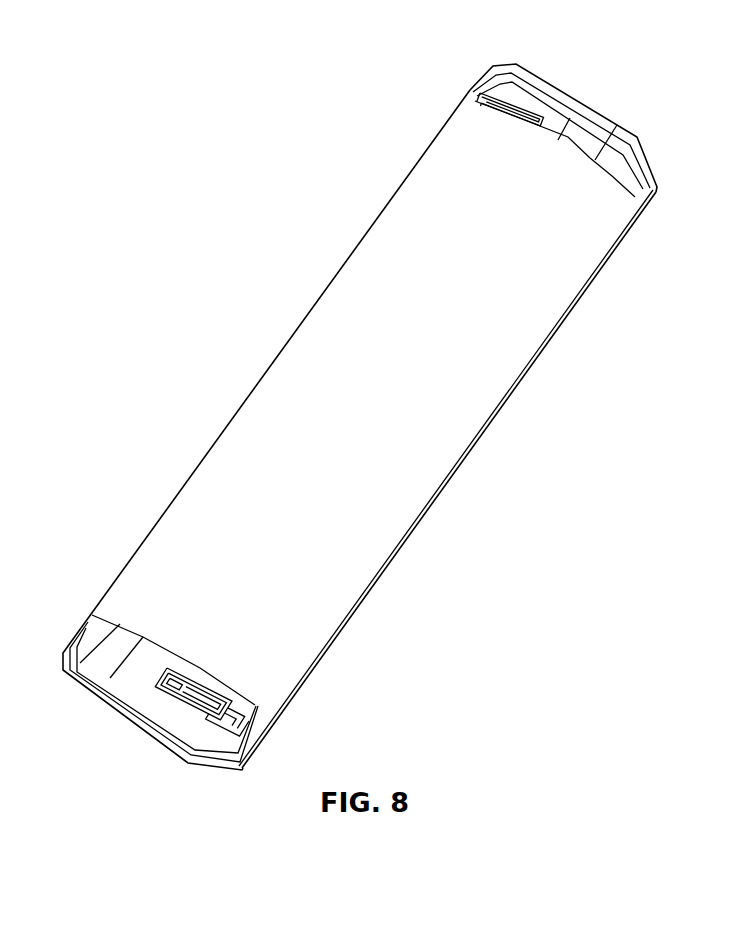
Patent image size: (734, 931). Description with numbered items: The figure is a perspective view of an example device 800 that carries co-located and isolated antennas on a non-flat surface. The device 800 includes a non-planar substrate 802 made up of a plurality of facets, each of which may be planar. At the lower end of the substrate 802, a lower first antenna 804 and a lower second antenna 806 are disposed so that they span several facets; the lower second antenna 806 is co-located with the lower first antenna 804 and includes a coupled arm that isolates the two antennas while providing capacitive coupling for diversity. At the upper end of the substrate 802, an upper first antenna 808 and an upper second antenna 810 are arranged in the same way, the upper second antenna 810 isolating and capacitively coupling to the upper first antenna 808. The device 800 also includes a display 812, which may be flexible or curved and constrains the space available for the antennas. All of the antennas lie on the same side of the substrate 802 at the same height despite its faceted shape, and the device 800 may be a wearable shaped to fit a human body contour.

The device 800 is at (366, 404).
The non-planar substrate 802 is at (532, 114).
The lower first antenna 804 is at (202, 696).
The lower second antenna 806 is at (255, 733).
The upper first antenna 808 is at (568, 105).
The upper second antenna 810 is at (472, 93).
The display 812 is at (297, 380).